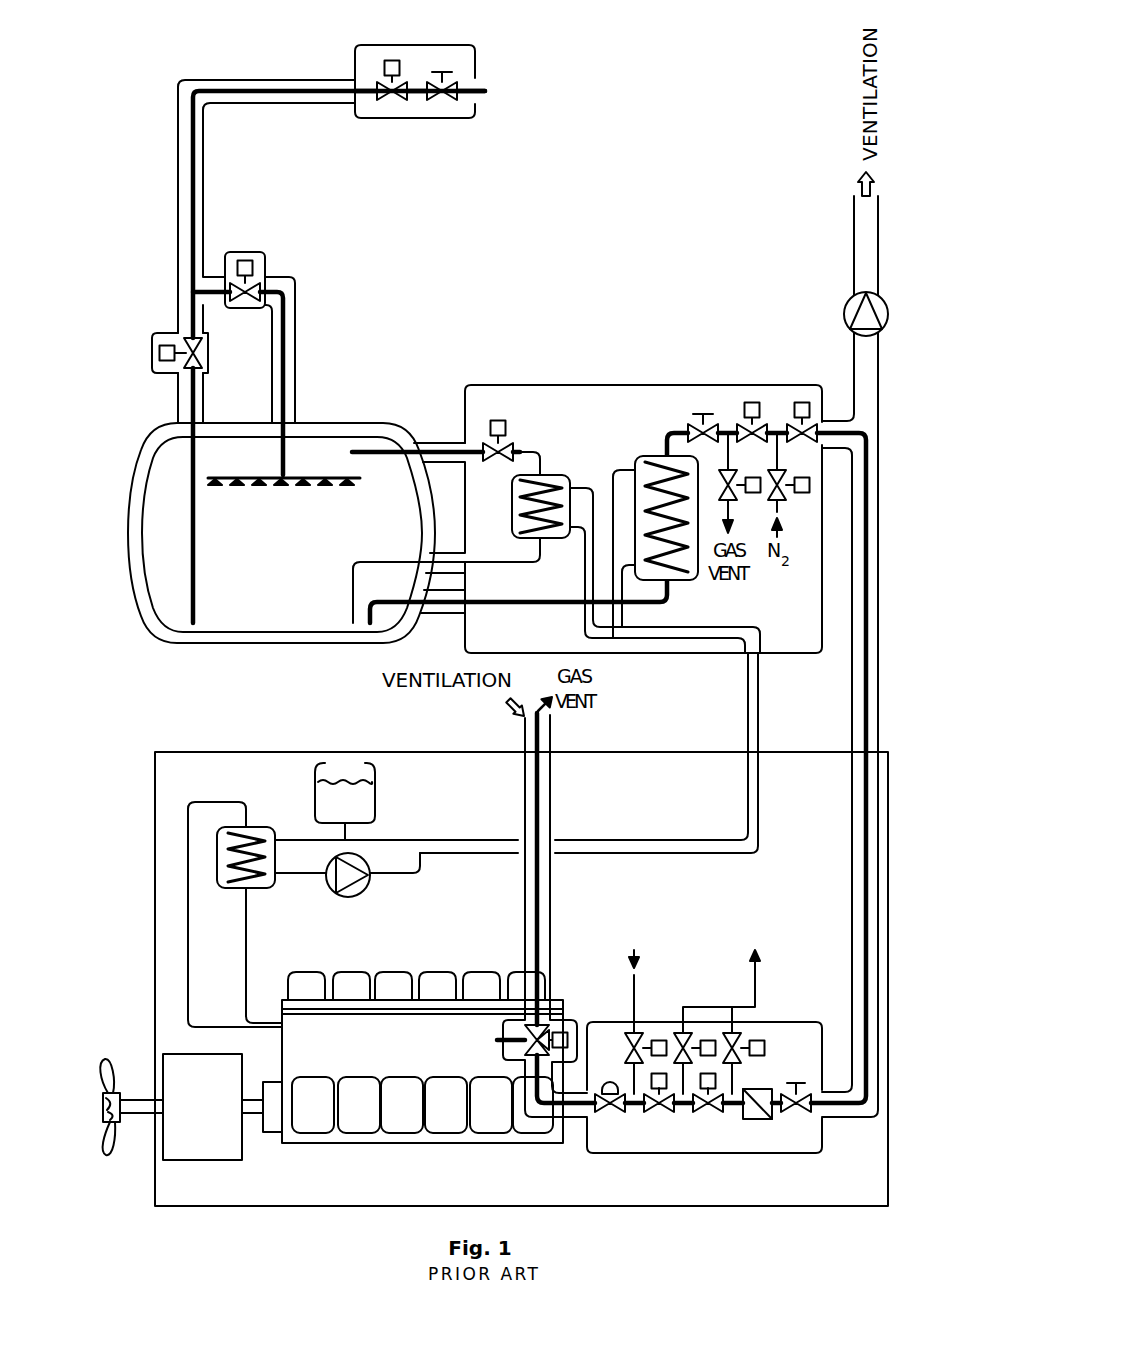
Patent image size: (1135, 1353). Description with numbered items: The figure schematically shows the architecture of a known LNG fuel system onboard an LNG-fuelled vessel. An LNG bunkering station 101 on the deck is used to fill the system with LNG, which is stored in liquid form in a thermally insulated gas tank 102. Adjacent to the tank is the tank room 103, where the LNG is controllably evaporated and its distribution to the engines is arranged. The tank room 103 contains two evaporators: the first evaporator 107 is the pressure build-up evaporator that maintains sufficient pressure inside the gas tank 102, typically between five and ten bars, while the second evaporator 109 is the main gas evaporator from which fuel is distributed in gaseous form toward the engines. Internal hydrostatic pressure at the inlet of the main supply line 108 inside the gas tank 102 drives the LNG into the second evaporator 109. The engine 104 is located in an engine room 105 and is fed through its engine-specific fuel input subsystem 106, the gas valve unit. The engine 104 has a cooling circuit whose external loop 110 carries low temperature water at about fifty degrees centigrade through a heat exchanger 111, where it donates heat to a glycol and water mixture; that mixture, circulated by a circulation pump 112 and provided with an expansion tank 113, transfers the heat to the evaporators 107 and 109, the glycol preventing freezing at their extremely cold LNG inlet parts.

The LNG bunkering station 101 is at (478, 48).
The gas tank 102 is at (325, 445).
The tank room 103 is at (487, 393).
The engine 104 is at (568, 1148).
The engine room 105 is at (257, 763).
The fuel input subsystem 106 is at (815, 1122).
The first evaporator 107 is at (510, 527).
The main supply line 108 is at (517, 605).
The second evaporator 109 is at (643, 455).
The external loop 110 is at (251, 955).
The heat exchanger 111 is at (255, 827).
The circulation pump 112 is at (363, 893).
The expansion tank 113 is at (375, 795).